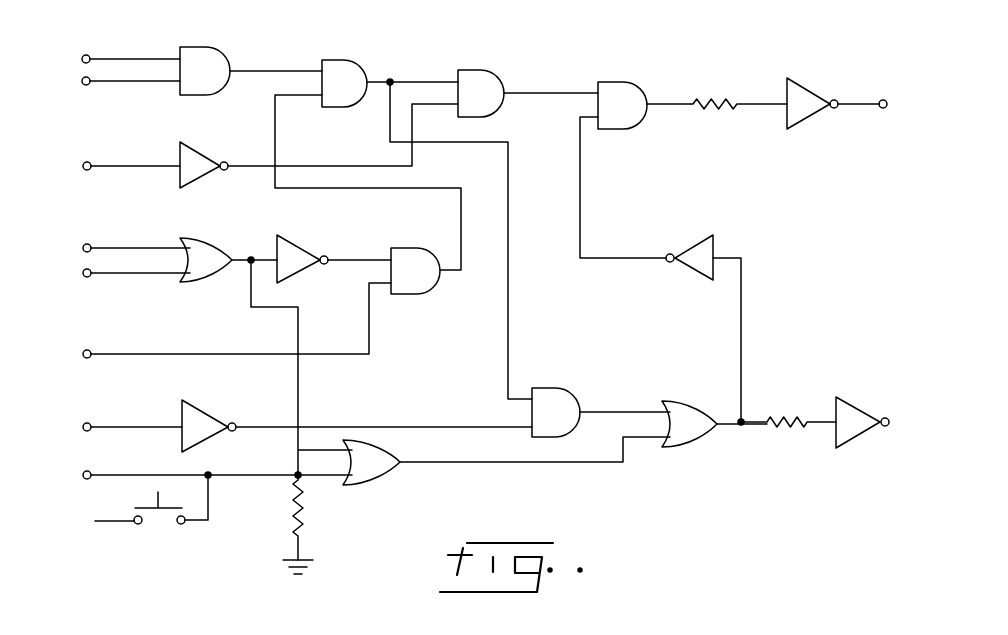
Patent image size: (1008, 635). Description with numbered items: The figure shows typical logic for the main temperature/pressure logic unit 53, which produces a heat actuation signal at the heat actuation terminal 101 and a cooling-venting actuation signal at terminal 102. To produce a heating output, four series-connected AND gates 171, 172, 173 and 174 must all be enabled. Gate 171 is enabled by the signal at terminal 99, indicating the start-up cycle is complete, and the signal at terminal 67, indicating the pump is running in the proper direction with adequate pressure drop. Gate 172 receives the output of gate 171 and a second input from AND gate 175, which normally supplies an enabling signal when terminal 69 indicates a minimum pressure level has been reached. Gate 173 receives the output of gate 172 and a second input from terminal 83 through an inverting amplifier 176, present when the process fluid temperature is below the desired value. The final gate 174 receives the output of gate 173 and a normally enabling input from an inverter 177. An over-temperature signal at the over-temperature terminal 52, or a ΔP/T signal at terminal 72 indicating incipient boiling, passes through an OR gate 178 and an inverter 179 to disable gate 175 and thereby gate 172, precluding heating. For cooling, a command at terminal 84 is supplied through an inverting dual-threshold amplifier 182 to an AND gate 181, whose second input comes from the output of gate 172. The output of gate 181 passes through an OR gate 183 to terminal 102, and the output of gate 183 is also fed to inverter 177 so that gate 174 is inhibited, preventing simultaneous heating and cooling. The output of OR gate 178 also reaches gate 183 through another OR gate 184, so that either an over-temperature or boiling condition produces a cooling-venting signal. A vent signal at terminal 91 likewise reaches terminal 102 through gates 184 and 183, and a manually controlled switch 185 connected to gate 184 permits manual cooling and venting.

The main temperature/pressure logic unit 53 is at (486, 314).
The terminal 99 is at (82, 58).
The terminal 67 is at (82, 82).
The terminal 83 is at (83, 168).
The over-temperature terminal 52 is at (83, 250).
The terminal 72 is at (83, 275).
The terminal 69 is at (83, 356).
The terminal 84 is at (83, 430).
The terminal 91 is at (83, 477).
The heat actuation terminal 101 is at (896, 85).
The terminal 102 is at (887, 418).
The AND gate 171 is at (216, 60).
The AND gate 172 is at (352, 62).
The AND gate 173 is at (486, 70).
The AND gate 174 is at (628, 80).
The AND gate 175 is at (430, 233).
The inverting amplifier 176 is at (194, 144).
The inverter 177 is at (706, 238).
The OR gate 178 is at (194, 285).
The inverter 179 is at (292, 242).
The AND gate 181 is at (540, 388).
The inverting dual-threshold amplifier 182 is at (190, 403).
The OR gate 183 is at (683, 399).
The OR gate 184 is at (365, 487).
The switch 185 is at (165, 512).